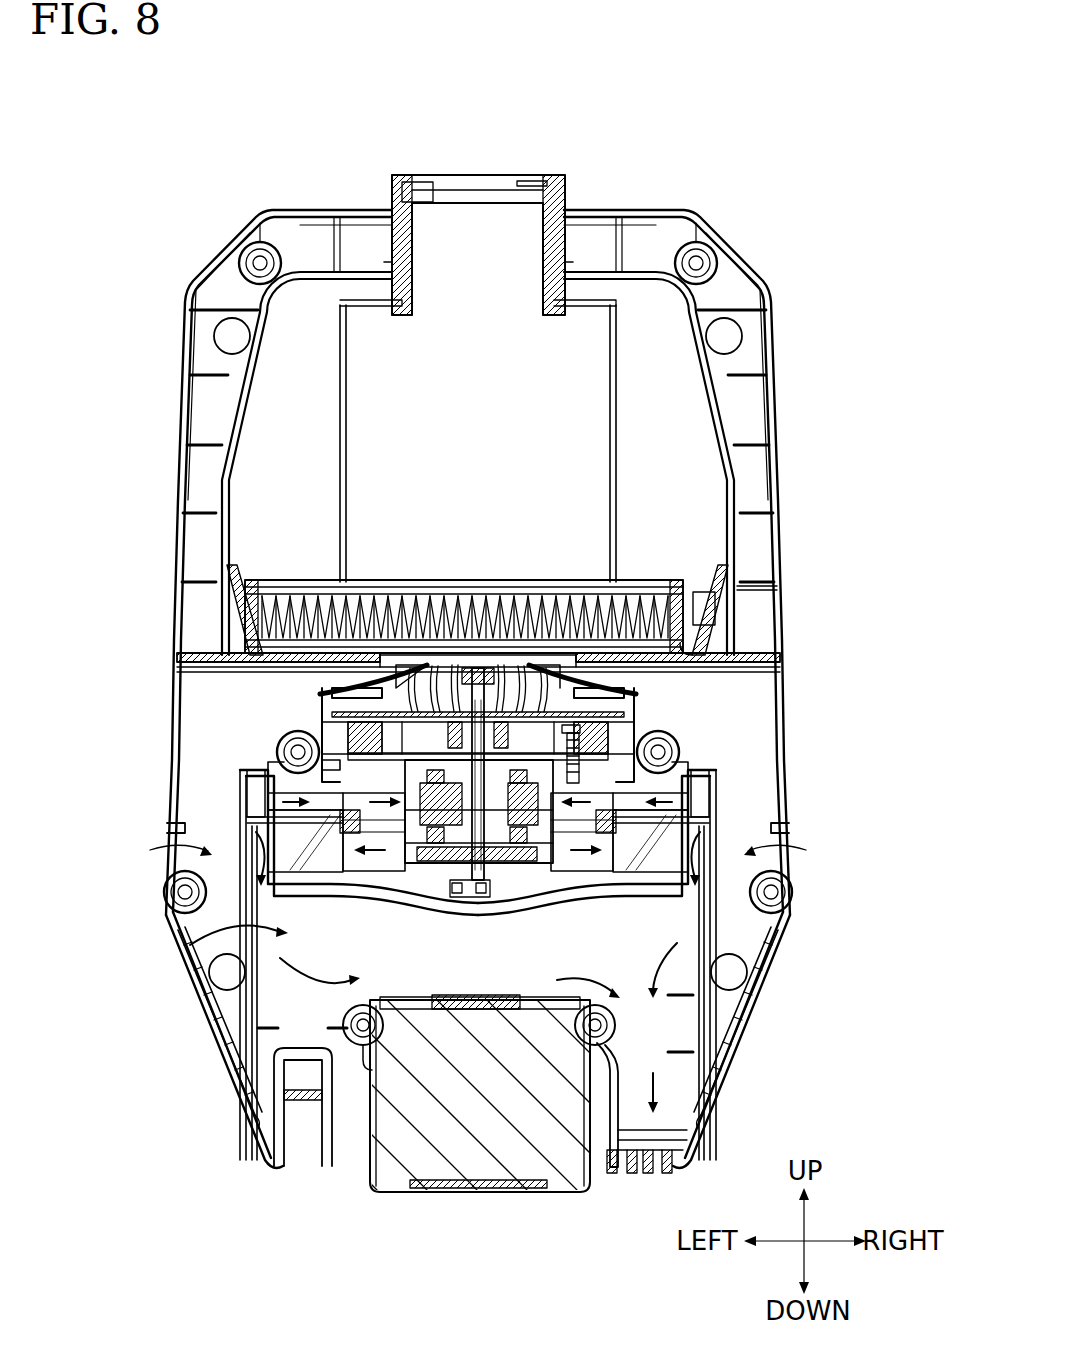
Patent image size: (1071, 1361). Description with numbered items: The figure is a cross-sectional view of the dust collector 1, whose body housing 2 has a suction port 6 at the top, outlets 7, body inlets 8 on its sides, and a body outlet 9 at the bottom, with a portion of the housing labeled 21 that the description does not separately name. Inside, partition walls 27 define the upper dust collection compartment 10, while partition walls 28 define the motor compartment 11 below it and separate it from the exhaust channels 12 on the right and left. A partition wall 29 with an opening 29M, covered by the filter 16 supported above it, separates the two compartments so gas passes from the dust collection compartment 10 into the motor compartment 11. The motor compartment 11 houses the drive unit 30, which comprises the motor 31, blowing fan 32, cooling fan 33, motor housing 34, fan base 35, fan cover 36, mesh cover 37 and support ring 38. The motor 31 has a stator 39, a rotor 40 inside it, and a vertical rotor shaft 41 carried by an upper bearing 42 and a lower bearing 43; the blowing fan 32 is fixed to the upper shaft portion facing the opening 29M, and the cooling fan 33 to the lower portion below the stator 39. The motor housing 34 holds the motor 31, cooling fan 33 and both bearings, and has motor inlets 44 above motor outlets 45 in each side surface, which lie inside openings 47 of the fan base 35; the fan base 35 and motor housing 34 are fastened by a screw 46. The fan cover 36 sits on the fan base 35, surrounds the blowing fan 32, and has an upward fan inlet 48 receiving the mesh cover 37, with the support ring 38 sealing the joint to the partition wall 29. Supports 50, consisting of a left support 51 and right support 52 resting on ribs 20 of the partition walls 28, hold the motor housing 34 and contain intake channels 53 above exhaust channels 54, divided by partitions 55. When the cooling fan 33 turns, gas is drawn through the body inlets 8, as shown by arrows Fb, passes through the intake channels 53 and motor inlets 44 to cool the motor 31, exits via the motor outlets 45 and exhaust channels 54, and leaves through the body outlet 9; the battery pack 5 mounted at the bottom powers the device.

The dust collector 1 is at (581, 176).
The body housing 2 is at (498, 689).
The battery pack 5 is at (363, 1115).
The suction port 6 is at (478, 222).
The outlets 7 is at (480, 1040).
The body inlets 8 is at (477, 793).
The body outlet 9 is at (645, 1115).
The dust collection compartment 10 is at (363, 441).
The motor compartment 11 is at (392, 972).
The exhaust channels 12 is at (477, 851).
The filter 16 is at (464, 591).
The ribs 20 is at (477, 716).
The housing upper portion 21 is at (502, 600).
The partition walls 27 is at (475, 446).
The partition walls 28 is at (477, 1027).
The partition wall 29 is at (514, 618).
The opening 29M is at (470, 598).
The drive unit 30 is at (587, 734).
The motor 31 is at (487, 890).
The blowing fan 32 is at (548, 626).
The cooling fan 33 is at (472, 862).
The motor housing 34 is at (222, 735).
The fan base 35 is at (439, 730).
The fan cover 36 is at (364, 688).
The mesh cover 37 is at (477, 621).
The support ring 38 is at (414, 688).
The stator 39 is at (495, 879).
The rotor 40 is at (492, 819).
The rotor shaft 41 is at (477, 870).
The bearing 42 is at (478, 639).
The bearing 43 is at (450, 879).
The motor inlets 44 is at (482, 869).
The motor outlets 45 is at (476, 895).
The screw 46 is at (583, 656).
The openings 47 is at (478, 769).
The fan inlet 48 is at (421, 609).
The supports 50 is at (486, 870).
The support 51 is at (286, 865).
The support 52 is at (678, 870).
The intake channels 53 is at (481, 807).
The exhaust channels 54 is at (478, 885).
The partitions 55 is at (481, 833).
The arrows Fb is at (475, 814).